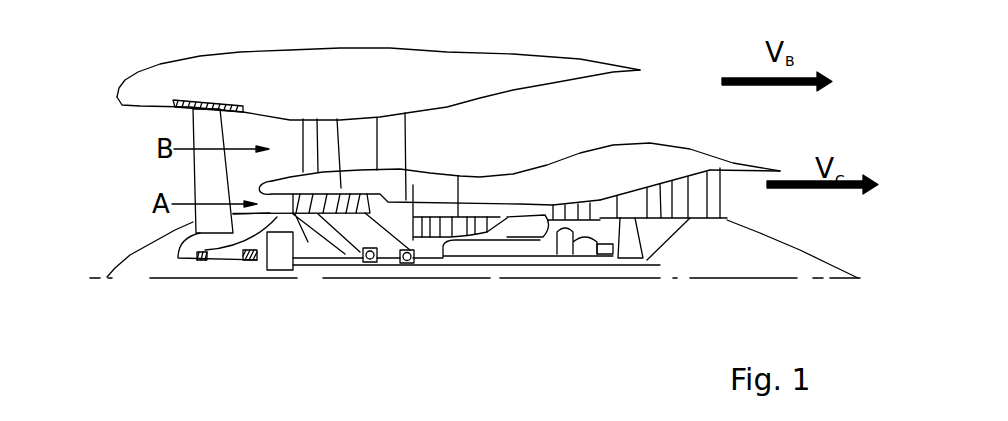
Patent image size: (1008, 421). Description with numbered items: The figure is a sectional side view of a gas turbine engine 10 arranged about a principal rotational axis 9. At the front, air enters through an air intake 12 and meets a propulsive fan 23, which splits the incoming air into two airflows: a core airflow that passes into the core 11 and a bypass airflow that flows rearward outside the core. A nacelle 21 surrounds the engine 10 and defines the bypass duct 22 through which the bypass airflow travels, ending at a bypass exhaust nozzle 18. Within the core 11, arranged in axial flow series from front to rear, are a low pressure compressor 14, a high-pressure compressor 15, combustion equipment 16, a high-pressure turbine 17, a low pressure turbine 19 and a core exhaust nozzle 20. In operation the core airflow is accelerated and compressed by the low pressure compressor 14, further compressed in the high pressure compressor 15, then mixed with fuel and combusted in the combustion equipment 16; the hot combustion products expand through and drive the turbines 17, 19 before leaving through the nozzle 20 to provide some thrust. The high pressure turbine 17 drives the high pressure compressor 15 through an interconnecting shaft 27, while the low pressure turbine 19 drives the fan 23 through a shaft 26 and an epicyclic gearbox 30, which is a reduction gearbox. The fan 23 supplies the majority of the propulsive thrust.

The principal rotational axis 9 is at (690, 280).
The gas turbine engine 10 is at (175, 60).
The core 11 is at (514, 180).
The air intake 12 is at (122, 144).
The low pressure compressor 14 is at (338, 121).
The high-pressure compressor 15 is at (460, 200).
The combustion equipment 16 is at (527, 227).
The high-pressure turbine 17 is at (581, 202).
The bypass exhaust nozzle 18 is at (688, 105).
The low pressure turbine 19 is at (698, 183).
The core exhaust nozzle 20 is at (757, 203).
The nacelle 21 is at (397, 63).
The bypass duct 22 is at (618, 116).
The propulsive fan 23 is at (192, 175).
The shaft 26 is at (460, 267).
The interconnecting shaft 27 is at (490, 256).
The epicyclic gearbox 30 is at (282, 271).